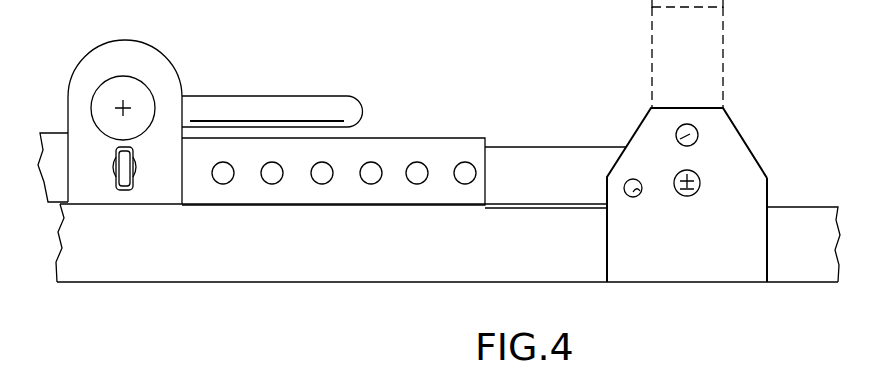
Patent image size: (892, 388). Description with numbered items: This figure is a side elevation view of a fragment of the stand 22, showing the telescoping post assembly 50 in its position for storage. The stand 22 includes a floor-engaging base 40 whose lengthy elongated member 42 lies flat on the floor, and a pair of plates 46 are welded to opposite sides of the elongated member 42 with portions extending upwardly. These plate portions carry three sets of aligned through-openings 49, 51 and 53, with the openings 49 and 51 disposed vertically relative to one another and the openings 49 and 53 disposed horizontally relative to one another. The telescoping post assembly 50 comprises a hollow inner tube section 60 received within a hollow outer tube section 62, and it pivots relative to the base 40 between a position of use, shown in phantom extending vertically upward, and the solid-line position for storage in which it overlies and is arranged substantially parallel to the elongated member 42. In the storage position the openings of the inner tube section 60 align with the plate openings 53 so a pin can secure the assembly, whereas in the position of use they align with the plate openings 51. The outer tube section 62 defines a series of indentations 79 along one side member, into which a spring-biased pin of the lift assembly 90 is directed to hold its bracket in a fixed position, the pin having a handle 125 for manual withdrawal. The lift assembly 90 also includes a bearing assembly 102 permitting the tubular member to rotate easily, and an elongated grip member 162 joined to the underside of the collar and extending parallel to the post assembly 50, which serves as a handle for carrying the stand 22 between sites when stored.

The stand 22 is at (780, 207).
The floor-engaging base 40 is at (797, 207).
The elongated member 42 is at (828, 207).
The plates 46 is at (748, 143).
The openings 49 is at (678, 196).
The telescoping post assembly 50 is at (63, 132).
The openings 51 is at (685, 132).
The openings 53 is at (633, 197).
The inner tube section 60 is at (560, 149).
The outer tube section 62 is at (378, 138).
The indentations 79 is at (462, 162).
The lift assembly 90 is at (82, 55).
The bearing assembly 102 is at (135, 77).
The handle 125 is at (130, 192).
The grip member 162 is at (288, 98).